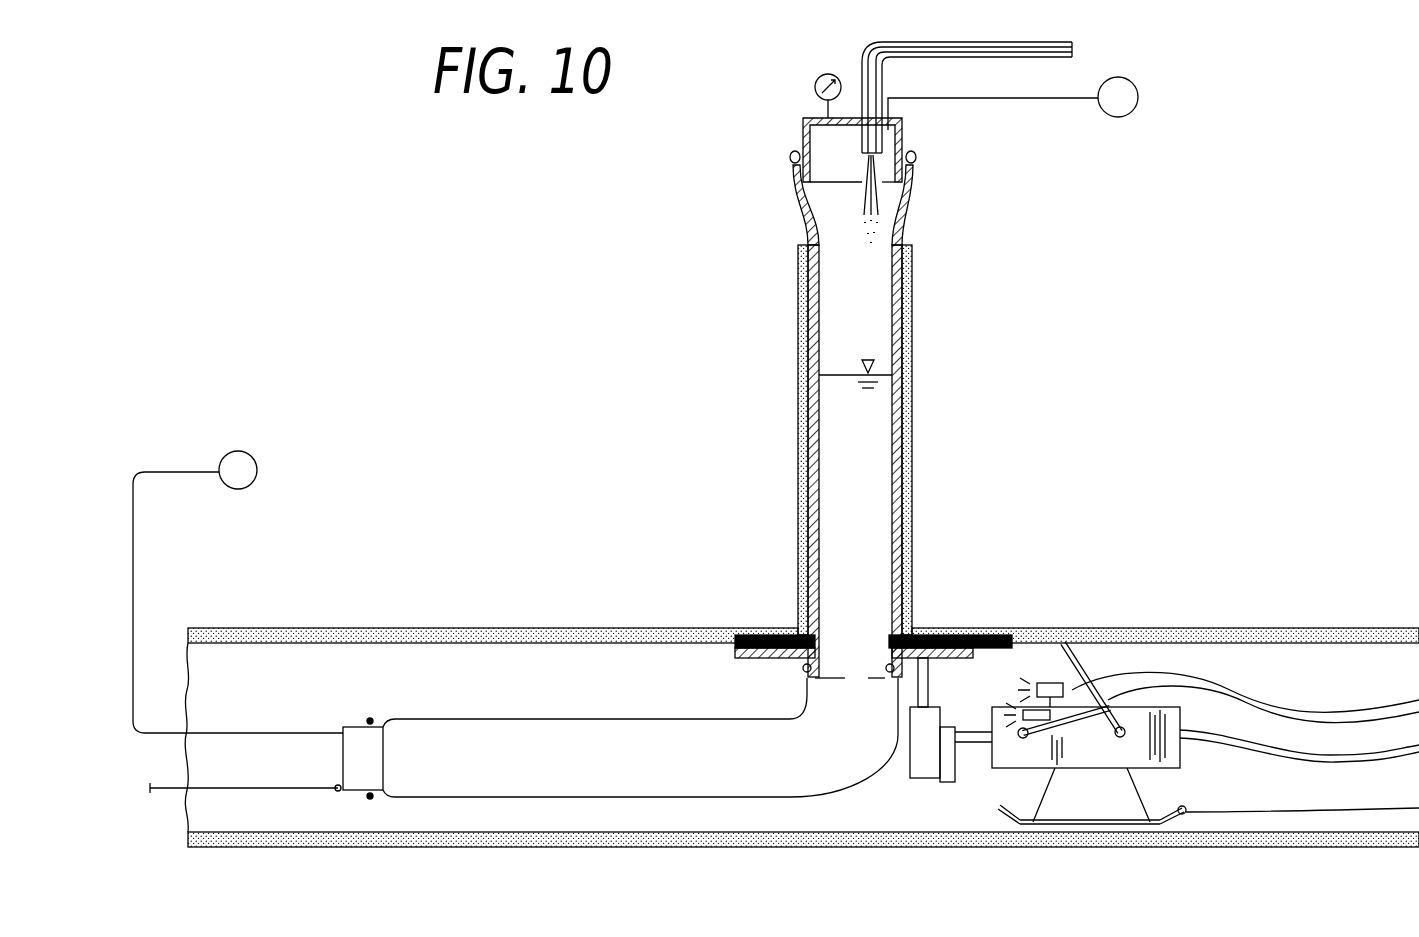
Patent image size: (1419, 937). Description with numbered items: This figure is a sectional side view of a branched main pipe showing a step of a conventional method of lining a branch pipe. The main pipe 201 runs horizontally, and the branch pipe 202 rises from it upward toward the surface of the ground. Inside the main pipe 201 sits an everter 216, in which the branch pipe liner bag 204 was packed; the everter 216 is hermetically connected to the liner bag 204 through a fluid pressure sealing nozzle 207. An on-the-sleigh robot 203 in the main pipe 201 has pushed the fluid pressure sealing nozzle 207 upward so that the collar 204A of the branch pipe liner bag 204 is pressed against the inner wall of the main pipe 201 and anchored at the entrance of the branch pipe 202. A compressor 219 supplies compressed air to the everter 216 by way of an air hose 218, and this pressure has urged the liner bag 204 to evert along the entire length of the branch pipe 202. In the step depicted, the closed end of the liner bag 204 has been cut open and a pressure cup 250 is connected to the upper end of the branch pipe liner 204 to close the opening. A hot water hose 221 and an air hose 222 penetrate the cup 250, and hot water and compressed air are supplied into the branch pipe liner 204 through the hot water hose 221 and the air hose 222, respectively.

The main pipe 201 is at (1156, 628).
The branch pipe 202 is at (914, 483).
The on-the-sleigh robot 203 is at (1083, 768).
The branch pipe liner bag 204 is at (913, 226).
The collar 204A is at (948, 630).
The fluid pressure sealing nozzle 207 is at (748, 658).
The everter 216 is at (588, 719).
The air hose 218 is at (133, 600).
The compressor 219 is at (257, 470).
The hot water hose 221 is at (862, 64).
The air hose 222 is at (998, 98).
The pressure cup 250 is at (803, 135).